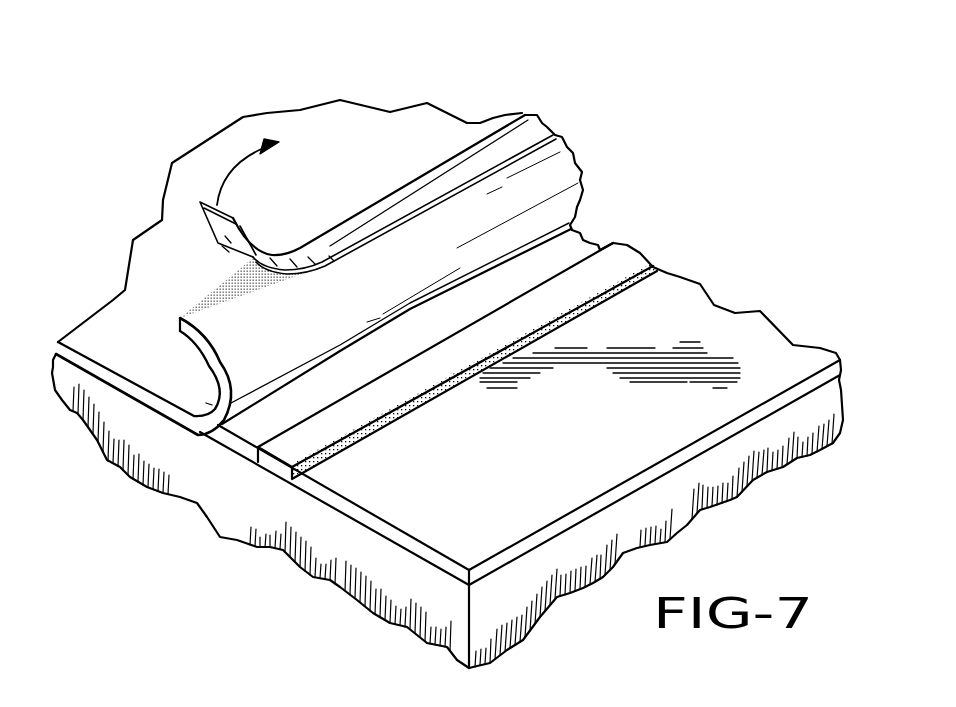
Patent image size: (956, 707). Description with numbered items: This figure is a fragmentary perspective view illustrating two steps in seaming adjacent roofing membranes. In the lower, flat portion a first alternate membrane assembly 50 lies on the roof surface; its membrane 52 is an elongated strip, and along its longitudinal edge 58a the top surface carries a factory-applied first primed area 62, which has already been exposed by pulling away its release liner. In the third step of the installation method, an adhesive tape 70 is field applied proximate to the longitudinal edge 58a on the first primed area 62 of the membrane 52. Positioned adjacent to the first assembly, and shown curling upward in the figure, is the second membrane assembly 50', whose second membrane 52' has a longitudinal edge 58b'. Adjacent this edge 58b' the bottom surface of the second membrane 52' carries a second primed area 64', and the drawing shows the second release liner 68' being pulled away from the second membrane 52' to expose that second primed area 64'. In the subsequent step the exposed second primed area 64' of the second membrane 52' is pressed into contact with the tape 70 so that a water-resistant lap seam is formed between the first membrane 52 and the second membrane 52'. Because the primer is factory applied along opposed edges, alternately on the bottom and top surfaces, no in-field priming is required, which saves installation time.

The second membrane assembly 50' is at (334, 88).
The second membrane 52' is at (168, 238).
The second release liner 68' is at (406, 269).
The second primed area 64' is at (237, 283).
The longitudinal edge 58b' is at (128, 347).
The first alternate membrane assembly 50 is at (447, 416).
The membrane 52 is at (656, 446).
The longitudinal edge 58a is at (245, 462).
The adhesive tape 70 is at (310, 435).
The first primed area 62 is at (407, 410).